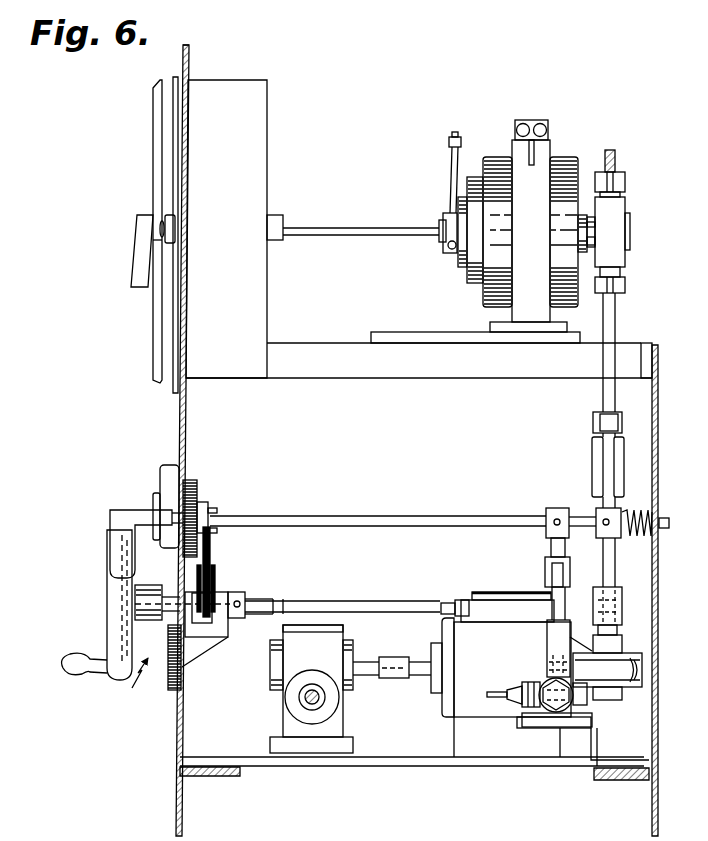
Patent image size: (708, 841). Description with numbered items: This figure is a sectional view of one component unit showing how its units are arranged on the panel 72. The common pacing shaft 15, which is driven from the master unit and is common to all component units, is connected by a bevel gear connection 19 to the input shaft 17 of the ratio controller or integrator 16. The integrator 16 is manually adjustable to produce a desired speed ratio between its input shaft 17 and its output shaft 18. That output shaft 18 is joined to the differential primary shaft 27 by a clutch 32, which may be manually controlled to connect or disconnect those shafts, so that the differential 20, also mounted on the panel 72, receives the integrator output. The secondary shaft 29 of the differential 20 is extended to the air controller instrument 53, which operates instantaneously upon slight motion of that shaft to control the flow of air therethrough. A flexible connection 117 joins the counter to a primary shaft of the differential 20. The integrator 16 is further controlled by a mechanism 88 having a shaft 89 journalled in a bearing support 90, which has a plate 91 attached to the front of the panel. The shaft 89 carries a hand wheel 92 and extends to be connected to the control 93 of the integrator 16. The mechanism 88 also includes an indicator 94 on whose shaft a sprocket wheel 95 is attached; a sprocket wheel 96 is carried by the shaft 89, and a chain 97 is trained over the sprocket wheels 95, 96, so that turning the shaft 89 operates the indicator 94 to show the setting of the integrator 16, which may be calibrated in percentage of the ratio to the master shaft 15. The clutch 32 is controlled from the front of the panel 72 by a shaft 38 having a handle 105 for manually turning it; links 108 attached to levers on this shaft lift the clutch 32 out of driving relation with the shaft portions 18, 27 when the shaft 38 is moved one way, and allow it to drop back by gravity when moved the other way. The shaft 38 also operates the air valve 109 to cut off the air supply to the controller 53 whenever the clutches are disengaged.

The air controller instrument 53 is at (273, 119).
The secondary shaft of the differential 29 is at (337, 227).
The differential 20 is at (567, 139).
The flexible connection 117 is at (616, 160).
The differential primary shaft 27 is at (600, 393).
The links 108 is at (593, 423).
The clutch 32 is at (596, 468).
The shaft 38 is at (398, 516).
The indicator 94 is at (153, 493).
The sprocket wheel 95 is at (210, 507).
The chain 97 is at (212, 552).
The sprocket wheel 96 is at (209, 600).
The shaft 89 is at (257, 600).
The handle 105 is at (112, 560).
The hand wheel 92 is at (112, 678).
The mechanism 88 is at (130, 689).
The plate 91 is at (168, 687).
The bearing support 90 is at (203, 654).
The panel 72 is at (182, 735).
The bevel gear connection 19 is at (345, 634).
The shaft 15 is at (320, 699).
The input shaft 17 is at (396, 679).
The control 93 is at (463, 600).
The ratio controller or integrator 16 is at (514, 580).
The output shaft 18 is at (612, 573).
The air valve 109 is at (512, 686).